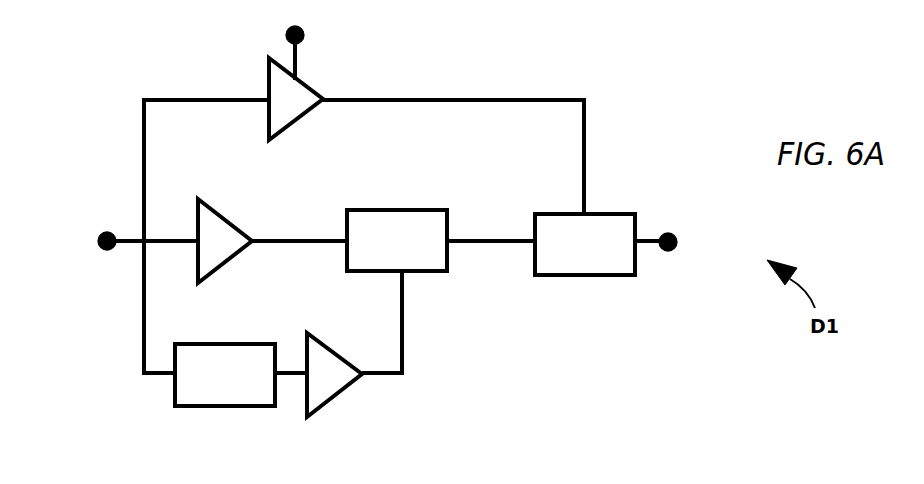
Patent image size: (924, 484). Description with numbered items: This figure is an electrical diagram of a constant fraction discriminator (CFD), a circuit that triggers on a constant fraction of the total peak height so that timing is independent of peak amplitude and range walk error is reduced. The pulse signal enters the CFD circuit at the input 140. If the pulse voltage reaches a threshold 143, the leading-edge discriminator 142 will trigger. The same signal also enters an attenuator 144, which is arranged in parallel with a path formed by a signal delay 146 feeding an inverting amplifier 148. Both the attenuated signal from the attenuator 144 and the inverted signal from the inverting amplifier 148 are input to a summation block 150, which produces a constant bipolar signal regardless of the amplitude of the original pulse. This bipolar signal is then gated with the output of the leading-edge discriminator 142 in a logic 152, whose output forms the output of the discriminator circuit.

The CFD circuit input 140 is at (105, 233).
The leading-edge discriminator 142 is at (303, 114).
The threshold 143 is at (304, 38).
The attenuator 144 is at (223, 214).
The signal delay 146 is at (262, 344).
The inverting amplifier 148 is at (343, 395).
The summation block 150 is at (418, 209).
The logic 152 is at (607, 212).